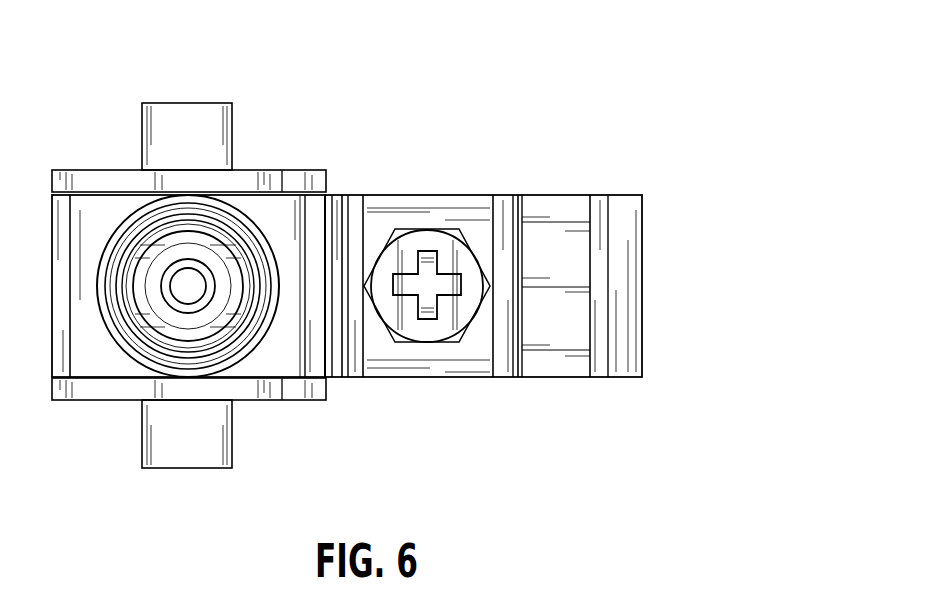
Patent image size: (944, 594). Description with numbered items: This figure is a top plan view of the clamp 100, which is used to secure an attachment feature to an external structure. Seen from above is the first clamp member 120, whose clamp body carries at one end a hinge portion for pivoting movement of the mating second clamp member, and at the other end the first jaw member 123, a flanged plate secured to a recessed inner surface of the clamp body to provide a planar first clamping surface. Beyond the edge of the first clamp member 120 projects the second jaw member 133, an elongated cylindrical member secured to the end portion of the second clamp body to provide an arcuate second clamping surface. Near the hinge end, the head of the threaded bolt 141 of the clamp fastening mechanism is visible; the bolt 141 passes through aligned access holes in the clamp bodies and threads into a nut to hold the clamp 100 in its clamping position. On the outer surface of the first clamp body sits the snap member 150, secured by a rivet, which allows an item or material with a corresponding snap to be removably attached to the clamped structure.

The clamp 100 is at (588, 110).
The first clamp member 120 is at (469, 412).
The first jaw member 123 is at (302, 430).
The second jaw member 133 is at (177, 495).
The threaded bolt 141 is at (431, 198).
The snap member 150 is at (255, 180).